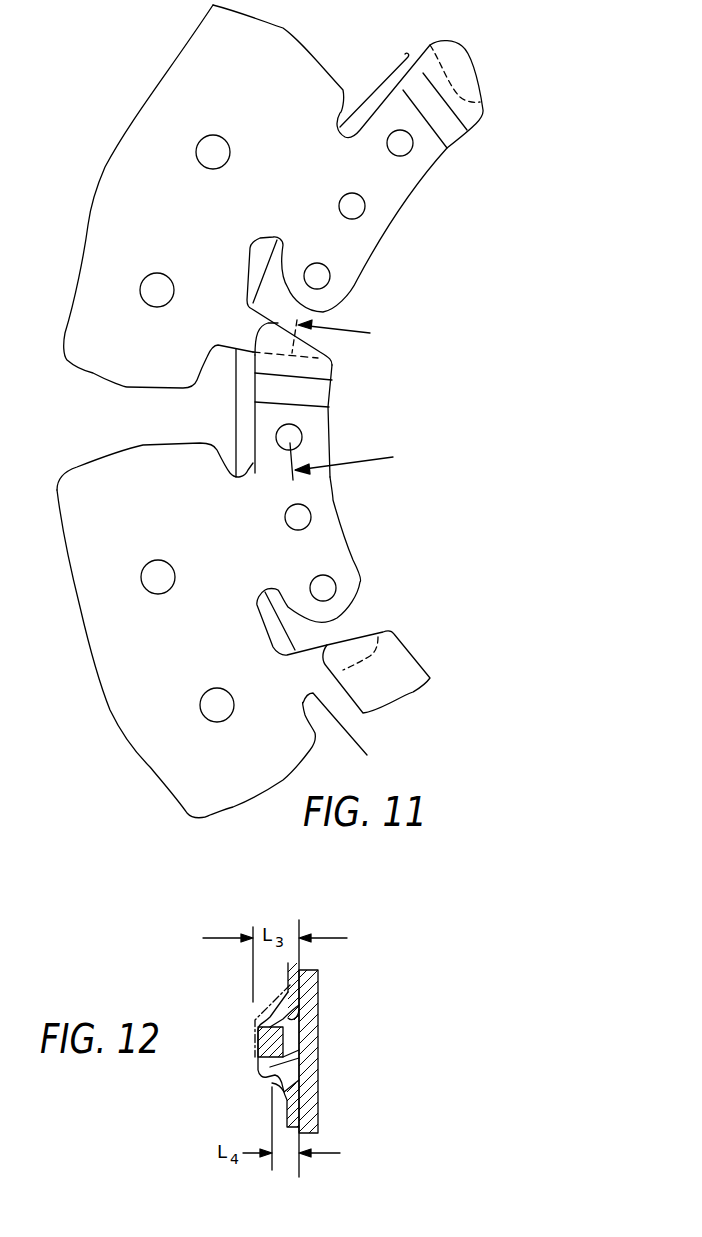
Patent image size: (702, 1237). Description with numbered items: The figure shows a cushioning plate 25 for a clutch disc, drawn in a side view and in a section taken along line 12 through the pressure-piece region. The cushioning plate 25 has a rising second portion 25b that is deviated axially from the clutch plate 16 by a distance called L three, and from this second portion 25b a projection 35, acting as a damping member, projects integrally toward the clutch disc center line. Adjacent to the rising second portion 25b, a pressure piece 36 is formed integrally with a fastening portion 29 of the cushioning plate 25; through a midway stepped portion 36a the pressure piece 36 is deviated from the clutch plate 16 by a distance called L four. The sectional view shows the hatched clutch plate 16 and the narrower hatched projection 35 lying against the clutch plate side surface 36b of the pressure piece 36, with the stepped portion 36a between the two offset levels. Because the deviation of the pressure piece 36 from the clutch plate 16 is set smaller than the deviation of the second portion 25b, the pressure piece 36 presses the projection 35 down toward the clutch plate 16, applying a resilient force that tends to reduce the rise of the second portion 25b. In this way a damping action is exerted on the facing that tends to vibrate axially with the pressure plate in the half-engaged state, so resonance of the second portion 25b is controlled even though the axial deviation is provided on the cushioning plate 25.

In FIG. 11, the section line 12- 12 is at (360, 400).
In FIG. 11, the clutch plate 16 is at (248, 438).
In FIG. 12, the clutch plate 16 is at (308, 1090).
In FIG. 11, the cushioning plate 25 is at (100, 600).
In FIG. 11, the second portion 25b is at (112, 355).
In FIG. 11, the fastening portion 29 is at (325, 505).
In FIG. 11, the projection 35 is at (235, 333).
In FIG. 12, the projection 35 is at (300, 1020).
In FIG. 11, the pressure piece 36 is at (330, 432).
In FIG. 12, the pressure piece 36 is at (250, 1048).
In FIG. 11, the stepped portion 36a is at (313, 393).
In FIG. 12, the stepped portion 36a is at (270, 1098).
In FIG. 12, the clutch plate side surface 36b is at (321, 1075).